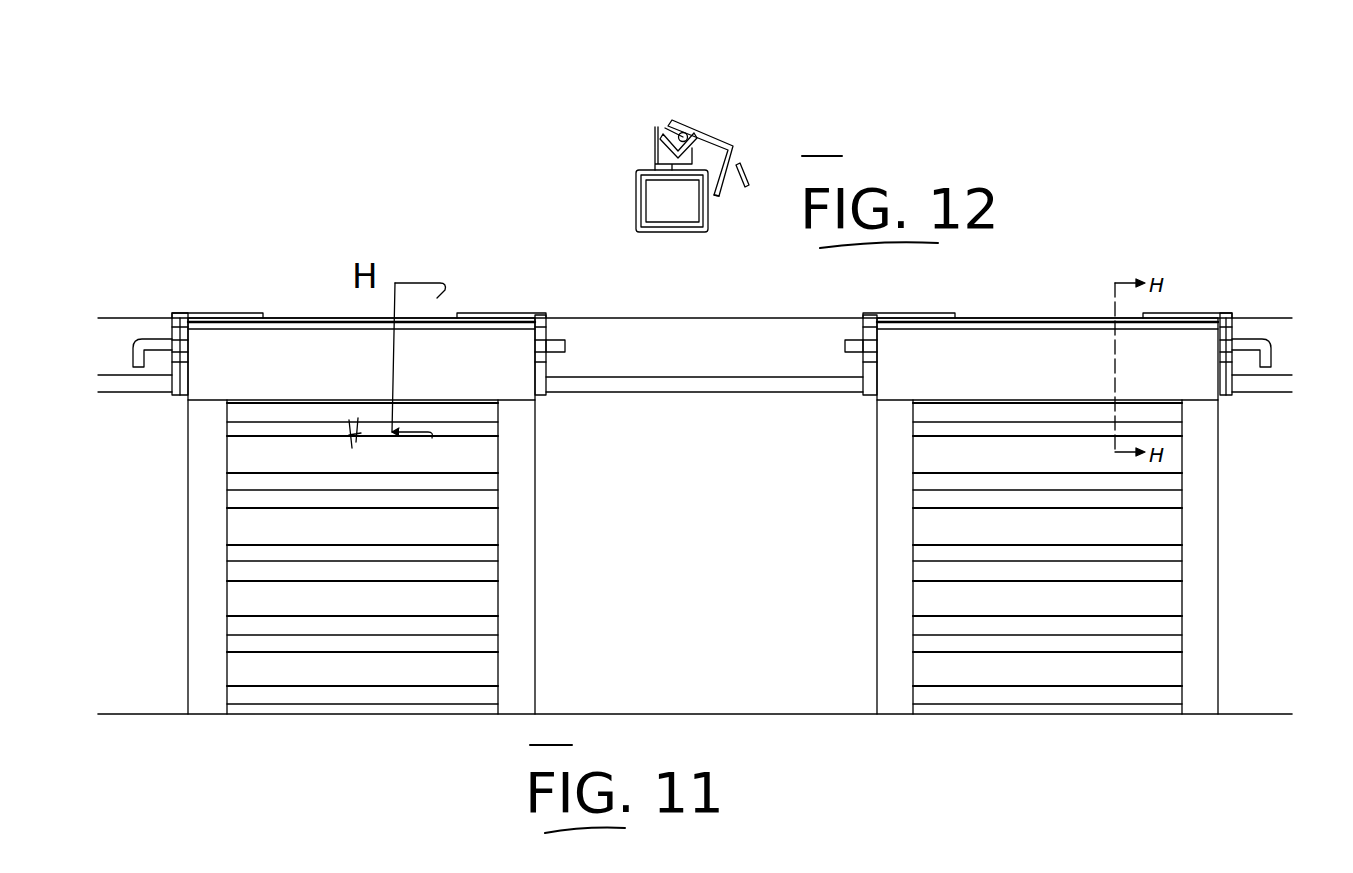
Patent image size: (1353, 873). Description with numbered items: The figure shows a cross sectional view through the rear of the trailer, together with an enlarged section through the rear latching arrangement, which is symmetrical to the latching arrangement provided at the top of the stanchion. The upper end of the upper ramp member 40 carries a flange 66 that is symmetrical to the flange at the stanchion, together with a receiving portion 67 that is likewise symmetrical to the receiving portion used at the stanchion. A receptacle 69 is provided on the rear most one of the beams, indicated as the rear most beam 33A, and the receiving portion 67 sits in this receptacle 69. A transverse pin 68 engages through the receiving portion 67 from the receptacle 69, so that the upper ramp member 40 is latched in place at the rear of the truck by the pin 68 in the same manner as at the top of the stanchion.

The rear most beam 33A is at (636, 202).
The upper ramp member 40 is at (742, 216).
The flange 66 is at (712, 128).
The receiving portion 67 is at (655, 128).
The pin 68 is at (687, 134).
The receptacle 69 is at (655, 148).